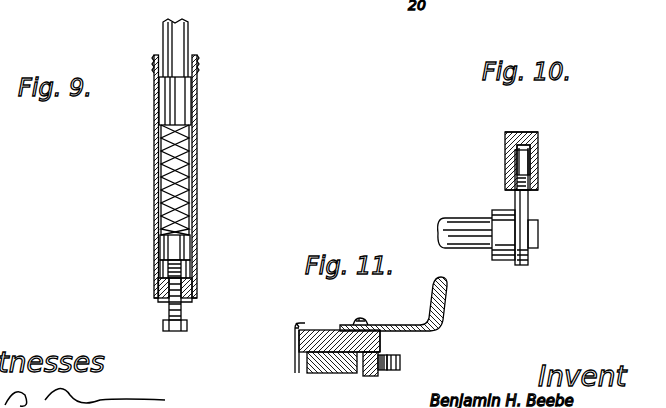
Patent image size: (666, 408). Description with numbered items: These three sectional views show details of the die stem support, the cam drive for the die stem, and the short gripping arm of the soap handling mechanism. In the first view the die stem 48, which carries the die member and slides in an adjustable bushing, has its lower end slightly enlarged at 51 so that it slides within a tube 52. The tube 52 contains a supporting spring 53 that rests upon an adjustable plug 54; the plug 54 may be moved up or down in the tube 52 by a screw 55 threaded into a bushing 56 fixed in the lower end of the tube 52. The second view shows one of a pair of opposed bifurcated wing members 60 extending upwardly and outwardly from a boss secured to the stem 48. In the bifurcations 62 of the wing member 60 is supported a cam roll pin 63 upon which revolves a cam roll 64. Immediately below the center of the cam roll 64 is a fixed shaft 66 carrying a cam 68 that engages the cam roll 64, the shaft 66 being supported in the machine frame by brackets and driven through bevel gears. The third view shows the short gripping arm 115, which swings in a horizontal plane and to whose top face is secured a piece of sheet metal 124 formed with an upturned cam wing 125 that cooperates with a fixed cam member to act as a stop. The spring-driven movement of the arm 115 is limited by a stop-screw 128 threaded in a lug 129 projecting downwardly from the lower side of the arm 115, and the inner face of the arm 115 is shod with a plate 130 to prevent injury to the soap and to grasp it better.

In FIG. 9, the stem 48 is at (186, 31).
In FIG. 9, the enlarged lower end of die stem 51 is at (197, 86).
In FIG. 9, the tube 52 is at (197, 180).
In FIG. 9, the supporting spring 53 is at (159, 193).
In FIG. 9, the adjustable plug 54 is at (191, 243).
In FIG. 9, the screw 55 is at (192, 272).
In FIG. 9, the bushing 56 is at (157, 286).
In FIG. 10, the bifurcated wing member 60 is at (516, 132).
In FIG. 10, the bifurcations 62 is at (505, 152).
In FIG. 10, the cam roll pin 63 is at (517, 176).
In FIG. 10, the cam roll 64 is at (540, 179).
In FIG. 10, the fixed shaft 66 is at (466, 226).
In FIG. 10, the cam 68 is at (529, 204).
In FIG. 11, the short gripping arm 115 is at (328, 330).
In FIG. 11, the piece of sheet metal 124 is at (389, 326).
In FIG. 11, the cam wing 125 is at (447, 302).
In FIG. 11, the stop-screw 128 is at (372, 376).
In FIG. 11, the lug 129 is at (382, 345).
In FIG. 11, the plate 130 is at (294, 348).